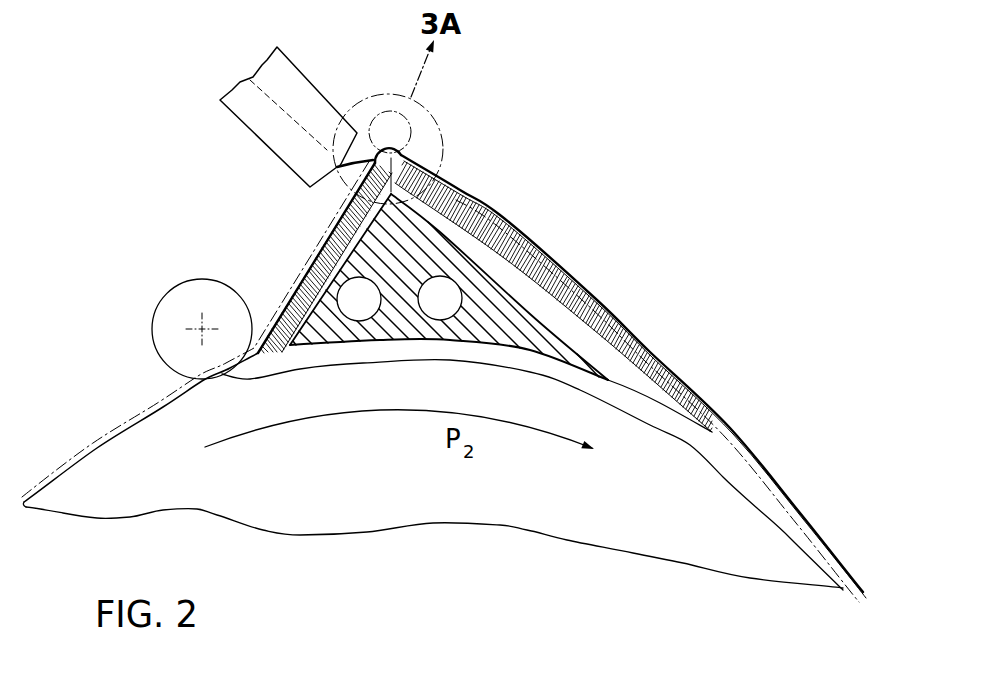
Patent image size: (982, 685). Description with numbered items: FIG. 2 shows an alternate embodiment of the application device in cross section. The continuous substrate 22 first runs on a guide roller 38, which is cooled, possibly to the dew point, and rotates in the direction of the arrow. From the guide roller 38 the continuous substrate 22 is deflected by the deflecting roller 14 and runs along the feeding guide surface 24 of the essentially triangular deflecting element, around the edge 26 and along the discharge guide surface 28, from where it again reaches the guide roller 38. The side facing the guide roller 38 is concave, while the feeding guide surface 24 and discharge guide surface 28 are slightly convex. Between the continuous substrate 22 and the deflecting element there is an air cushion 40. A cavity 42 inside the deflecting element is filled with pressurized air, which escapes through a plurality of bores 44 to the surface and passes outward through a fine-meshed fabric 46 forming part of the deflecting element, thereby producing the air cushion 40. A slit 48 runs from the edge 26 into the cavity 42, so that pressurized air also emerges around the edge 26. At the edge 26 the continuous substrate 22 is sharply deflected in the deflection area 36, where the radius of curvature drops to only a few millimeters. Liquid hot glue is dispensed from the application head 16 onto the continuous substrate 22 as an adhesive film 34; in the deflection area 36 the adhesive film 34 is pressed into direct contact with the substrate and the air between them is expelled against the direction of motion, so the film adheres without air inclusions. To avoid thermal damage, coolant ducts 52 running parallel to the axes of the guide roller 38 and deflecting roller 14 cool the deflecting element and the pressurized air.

The deflecting roller 14 is at (152, 316).
The application head 16 is at (280, 85).
The continuous substrate 22 is at (180, 394).
The feeding guide surface 24 is at (300, 290).
The edge 26 is at (298, 191).
The discharge guide surface 28 is at (666, 366).
The adhesive film 34 is at (355, 158).
The deflection area 36 is at (369, 104).
The guide roller 38 is at (394, 482).
The air cushion 40 is at (612, 308).
The cavity 42 is at (490, 270).
The bores 44 is at (456, 189).
The fine-meshed fabric 46 is at (330, 240).
The slit 48 is at (392, 158).
The coolant ducts 52 is at (372, 310).